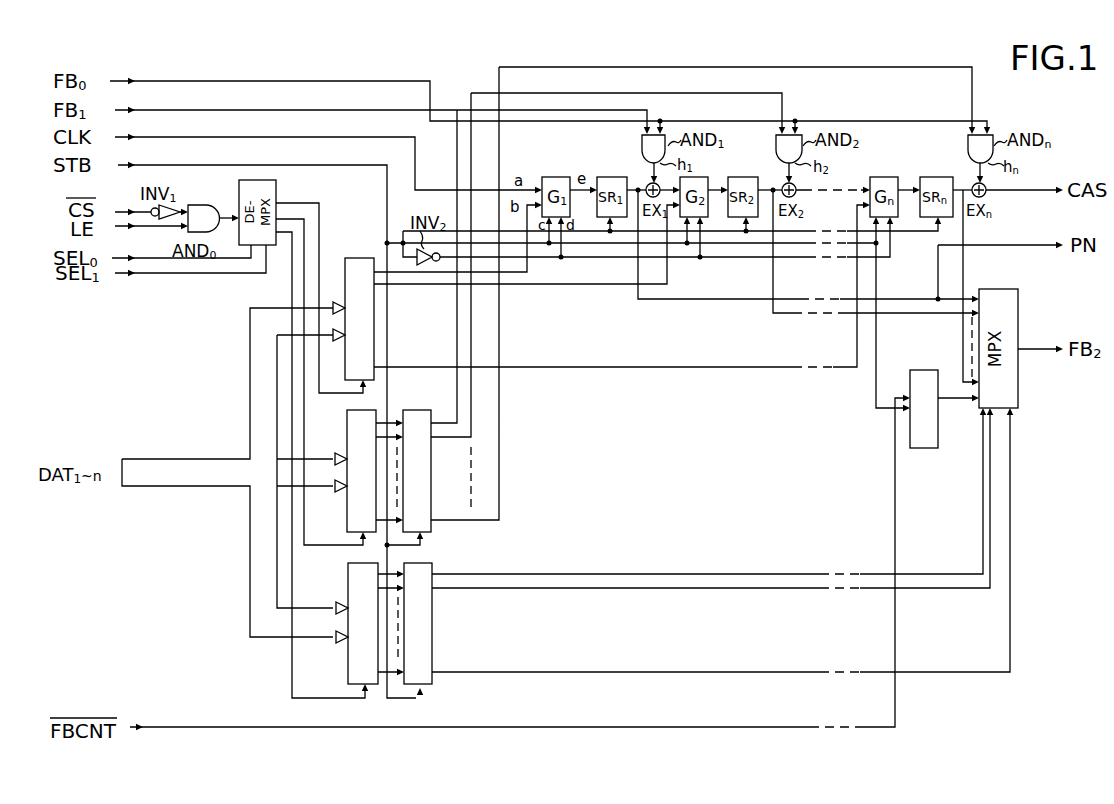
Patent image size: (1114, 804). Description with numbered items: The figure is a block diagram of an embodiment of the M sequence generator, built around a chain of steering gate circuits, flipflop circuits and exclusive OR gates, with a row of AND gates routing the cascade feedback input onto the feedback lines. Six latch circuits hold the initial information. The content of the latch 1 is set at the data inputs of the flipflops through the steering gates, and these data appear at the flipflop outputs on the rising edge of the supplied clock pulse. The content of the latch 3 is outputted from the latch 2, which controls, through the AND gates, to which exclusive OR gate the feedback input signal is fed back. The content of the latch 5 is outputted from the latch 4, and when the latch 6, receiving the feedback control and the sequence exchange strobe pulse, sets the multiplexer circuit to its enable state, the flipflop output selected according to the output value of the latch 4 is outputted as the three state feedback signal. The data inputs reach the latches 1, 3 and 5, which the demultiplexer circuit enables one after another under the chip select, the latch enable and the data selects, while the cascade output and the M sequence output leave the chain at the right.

The latch circuit 1 is at (359, 308).
The latch circuit 2 is at (417, 459).
The latch circuit 3 is at (348, 471).
The latch circuit 4 is at (435, 651).
The latch circuit 5 is at (348, 665).
The latch circuit 6 is at (927, 448).